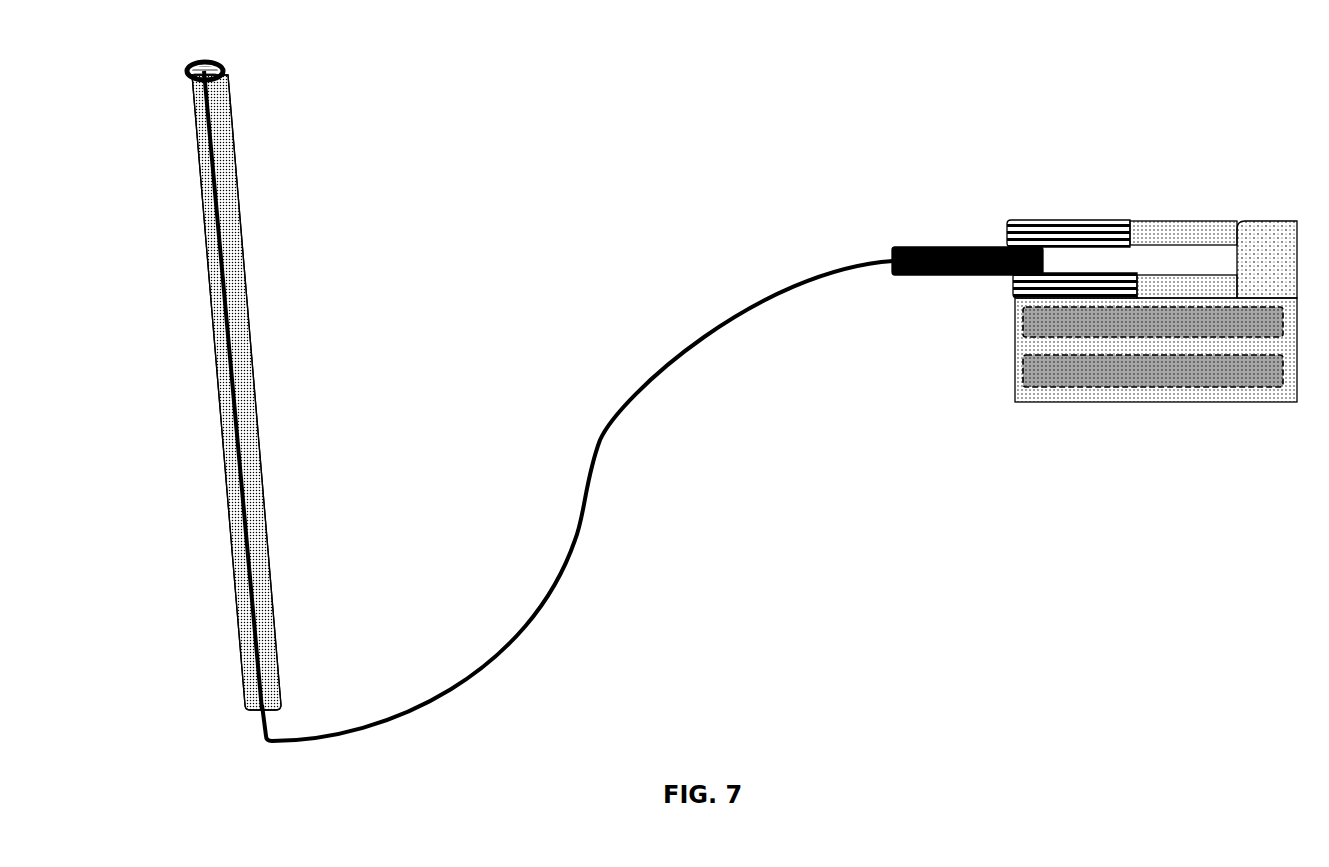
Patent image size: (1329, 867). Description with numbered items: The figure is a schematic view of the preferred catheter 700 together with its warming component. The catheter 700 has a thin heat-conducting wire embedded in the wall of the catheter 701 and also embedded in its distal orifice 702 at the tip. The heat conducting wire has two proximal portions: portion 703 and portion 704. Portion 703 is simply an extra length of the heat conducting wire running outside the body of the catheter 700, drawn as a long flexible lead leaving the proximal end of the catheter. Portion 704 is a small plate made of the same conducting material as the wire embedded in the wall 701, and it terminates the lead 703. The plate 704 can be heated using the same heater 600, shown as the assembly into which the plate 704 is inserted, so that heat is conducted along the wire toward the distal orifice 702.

The catheter 700 is at (223, 447).
The wall of the catheter 701 is at (264, 508).
The distal orifice 702 is at (223, 73).
The proximal portion of heat conducting wire 703 is at (568, 576).
The plate 704 is at (920, 247).
The heater 600 is at (1130, 402).